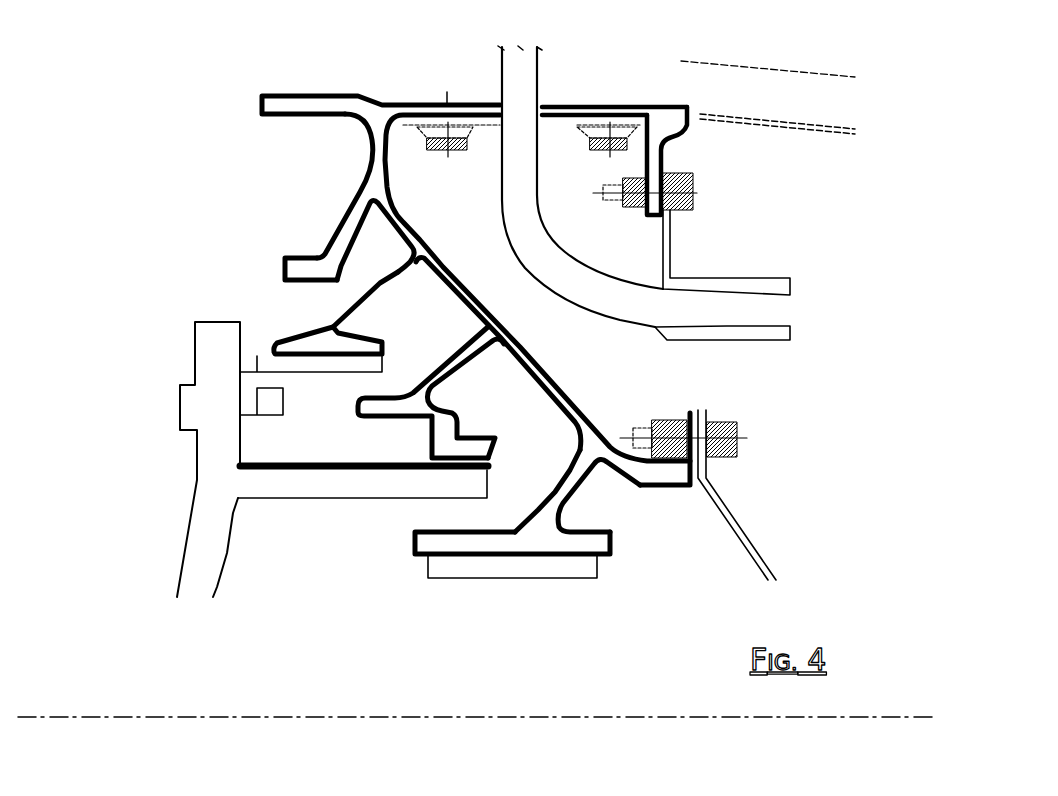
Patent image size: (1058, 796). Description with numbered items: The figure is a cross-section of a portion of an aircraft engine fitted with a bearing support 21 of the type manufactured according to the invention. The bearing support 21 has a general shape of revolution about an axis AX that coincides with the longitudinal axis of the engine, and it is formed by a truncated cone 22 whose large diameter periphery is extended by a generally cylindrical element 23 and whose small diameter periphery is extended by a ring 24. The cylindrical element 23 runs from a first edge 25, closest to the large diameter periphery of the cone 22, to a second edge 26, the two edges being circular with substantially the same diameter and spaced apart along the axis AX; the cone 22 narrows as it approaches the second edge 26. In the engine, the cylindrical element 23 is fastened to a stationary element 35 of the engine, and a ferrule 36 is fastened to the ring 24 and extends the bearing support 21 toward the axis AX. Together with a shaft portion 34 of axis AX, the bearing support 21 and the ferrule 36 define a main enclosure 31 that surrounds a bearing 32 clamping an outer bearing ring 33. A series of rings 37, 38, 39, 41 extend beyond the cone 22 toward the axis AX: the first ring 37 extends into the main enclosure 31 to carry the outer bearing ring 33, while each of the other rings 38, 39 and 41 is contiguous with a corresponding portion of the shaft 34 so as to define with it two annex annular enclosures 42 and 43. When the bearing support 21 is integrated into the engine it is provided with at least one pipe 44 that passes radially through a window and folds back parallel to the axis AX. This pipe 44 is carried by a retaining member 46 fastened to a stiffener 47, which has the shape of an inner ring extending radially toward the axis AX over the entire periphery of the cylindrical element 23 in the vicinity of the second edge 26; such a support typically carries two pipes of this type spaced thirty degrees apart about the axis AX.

The bearing support 21 is at (325, 182).
The cone 22 is at (598, 408).
The cylindrical element 23 is at (580, 107).
The ring 24 is at (690, 413).
The first edge 25 is at (262, 98).
The second edge 26 is at (688, 114).
The main enclosure 31 is at (487, 398).
The bearing 32 is at (605, 617).
The outer bearing ring 33 is at (484, 578).
The shaft portion 34 is at (168, 521).
The stationary element 35 is at (460, 86).
The ferrule 36 is at (724, 500).
The first ring 37 is at (415, 540).
The ring 38 is at (358, 413).
The ring 39 is at (290, 340).
The ring 41 is at (283, 258).
The annex annular enclosure 42 is at (411, 365).
The annex annular enclosure 43 is at (373, 241).
The pipe 44 is at (573, 266).
The retaining member 46 is at (672, 243).
The stiffener 47 is at (664, 160).
The axis AX is at (67, 715).